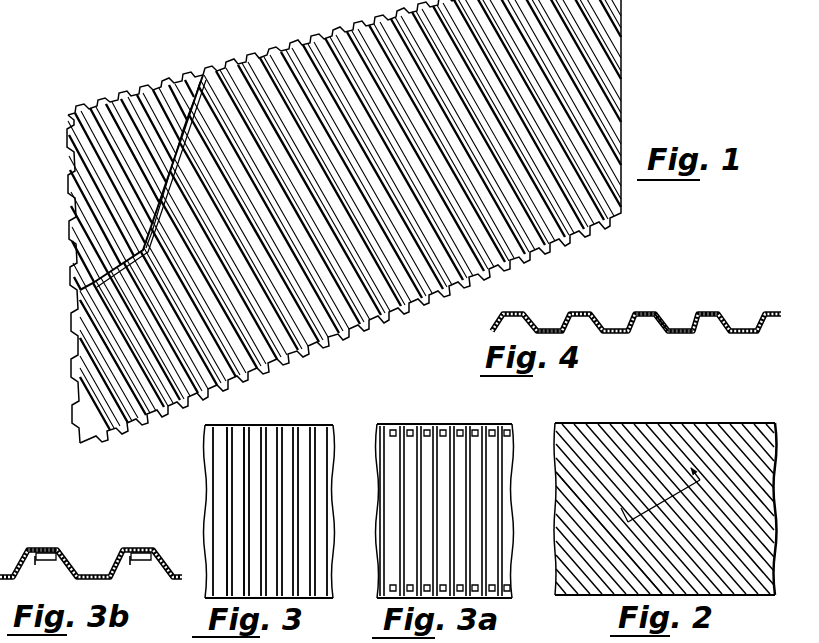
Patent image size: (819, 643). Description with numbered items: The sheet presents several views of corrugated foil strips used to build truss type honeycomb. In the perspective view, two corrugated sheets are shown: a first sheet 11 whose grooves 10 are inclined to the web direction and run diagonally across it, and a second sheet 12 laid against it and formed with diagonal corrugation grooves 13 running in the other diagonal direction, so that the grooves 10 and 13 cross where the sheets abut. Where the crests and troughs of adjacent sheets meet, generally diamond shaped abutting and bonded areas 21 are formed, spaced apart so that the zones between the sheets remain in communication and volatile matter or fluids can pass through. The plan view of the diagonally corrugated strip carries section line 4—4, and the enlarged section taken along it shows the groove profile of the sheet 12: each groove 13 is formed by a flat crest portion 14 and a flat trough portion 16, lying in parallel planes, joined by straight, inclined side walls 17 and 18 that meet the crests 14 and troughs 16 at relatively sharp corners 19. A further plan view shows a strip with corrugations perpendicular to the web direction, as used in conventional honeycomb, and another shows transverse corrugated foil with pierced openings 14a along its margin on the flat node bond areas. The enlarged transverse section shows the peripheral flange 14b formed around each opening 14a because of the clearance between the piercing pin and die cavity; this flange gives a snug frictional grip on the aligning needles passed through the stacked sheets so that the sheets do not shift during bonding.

In FIG. 1, the grooves 10 is at (98, 250).
In FIG. 1, the first sheet 11 is at (133, 121).
In FIG. 1, the second sheet 12 is at (175, 372).
In FIG. 4, the second sheet 12 is at (605, 315).
In FIG. 3, the second sheet 12 is at (278, 441).
In FIG. 3A, the second sheet 12 is at (461, 447).
In FIG. 2, the second sheet 12 is at (681, 444).
In FIG. 3B, the second sheet 12 is at (108, 559).
In FIG. 1, the corrugation grooves 13 is at (92, 424).
In FIG. 4, the corrugation grooves 13 is at (548, 327).
In FIG. 3, the corrugation grooves 13 is at (245, 455).
In FIG. 2, the corrugation grooves 13 is at (602, 453).
In FIG. 4, the crest portion 14 is at (643, 309).
In FIG. 3B, the crest portion 14 is at (58, 547).
In FIG. 3A, the pierced opening 14a is at (425, 425).
In FIG. 3B, the pierced opening 14a is at (45, 547).
In FIG. 3B, the peripheral flange 14b is at (37, 562).
In FIG. 4, the trough portion 16 is at (682, 328).
In FIG. 4, the inclined side wall 17 is at (667, 330).
In FIG. 4, the inclined side wall 18 is at (697, 312).
In FIG. 4, the corners 19 is at (667, 333).
In FIG. 1, the abutting and bonded areas 21 is at (82, 290).
In FIG. 2, the section line 4 is at (667, 515).